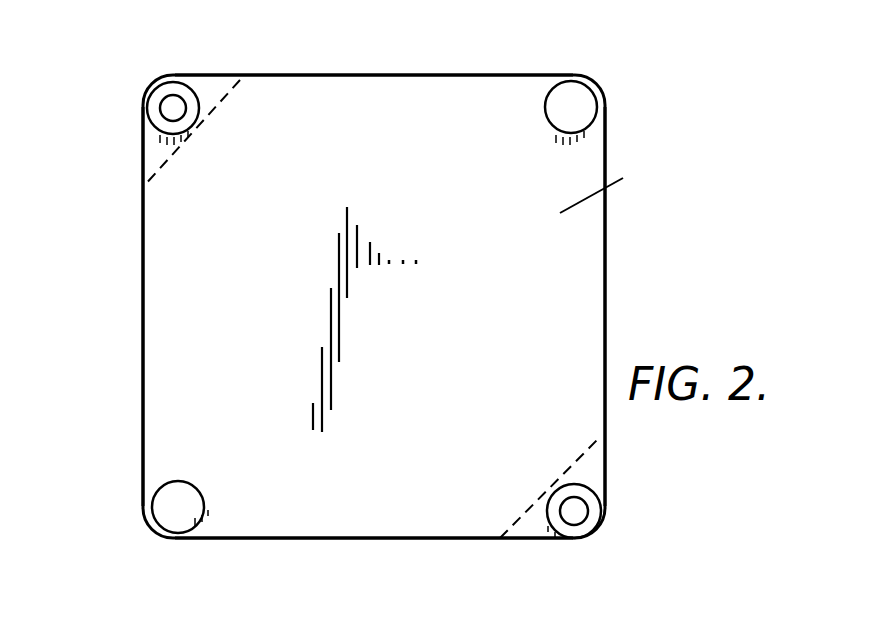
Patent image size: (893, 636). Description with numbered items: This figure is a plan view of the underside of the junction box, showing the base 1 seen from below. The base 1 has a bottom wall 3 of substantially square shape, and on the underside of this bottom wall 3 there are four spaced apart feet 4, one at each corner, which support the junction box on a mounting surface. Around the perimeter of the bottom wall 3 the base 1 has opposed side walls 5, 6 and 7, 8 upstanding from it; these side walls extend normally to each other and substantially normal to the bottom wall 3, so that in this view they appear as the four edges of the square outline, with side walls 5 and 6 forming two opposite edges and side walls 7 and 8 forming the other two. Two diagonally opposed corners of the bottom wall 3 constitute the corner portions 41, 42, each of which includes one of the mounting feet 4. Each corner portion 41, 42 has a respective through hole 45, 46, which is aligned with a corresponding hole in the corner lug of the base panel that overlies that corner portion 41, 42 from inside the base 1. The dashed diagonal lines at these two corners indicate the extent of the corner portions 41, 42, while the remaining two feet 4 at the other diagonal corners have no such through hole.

The base 1 is at (548, 350).
The bottom wall 3 is at (480, 293).
The feet 4 is at (193, 110).
The side wall 5 is at (348, 538).
The side wall 6 is at (377, 75).
The side wall 7 is at (143, 352).
The side wall 8 is at (605, 272).
The corner portion 41 is at (588, 463).
The corner portion 42 is at (152, 157).
The through hole 45 is at (580, 512).
The through hole 46 is at (167, 107).